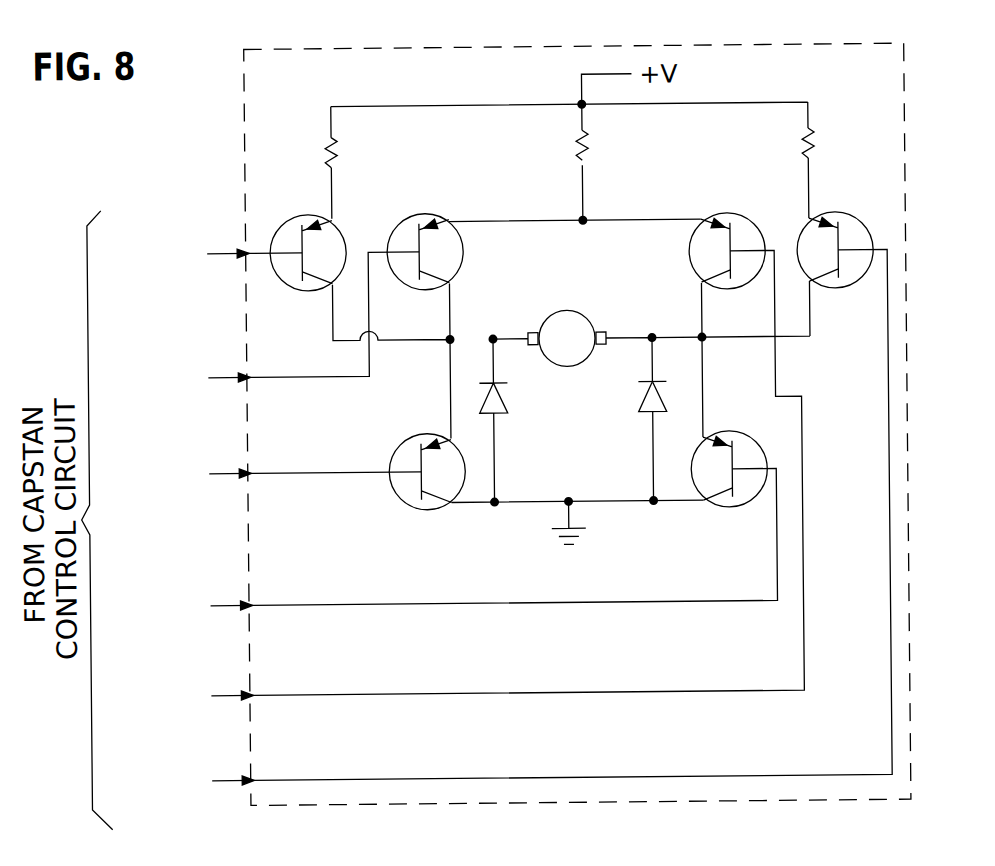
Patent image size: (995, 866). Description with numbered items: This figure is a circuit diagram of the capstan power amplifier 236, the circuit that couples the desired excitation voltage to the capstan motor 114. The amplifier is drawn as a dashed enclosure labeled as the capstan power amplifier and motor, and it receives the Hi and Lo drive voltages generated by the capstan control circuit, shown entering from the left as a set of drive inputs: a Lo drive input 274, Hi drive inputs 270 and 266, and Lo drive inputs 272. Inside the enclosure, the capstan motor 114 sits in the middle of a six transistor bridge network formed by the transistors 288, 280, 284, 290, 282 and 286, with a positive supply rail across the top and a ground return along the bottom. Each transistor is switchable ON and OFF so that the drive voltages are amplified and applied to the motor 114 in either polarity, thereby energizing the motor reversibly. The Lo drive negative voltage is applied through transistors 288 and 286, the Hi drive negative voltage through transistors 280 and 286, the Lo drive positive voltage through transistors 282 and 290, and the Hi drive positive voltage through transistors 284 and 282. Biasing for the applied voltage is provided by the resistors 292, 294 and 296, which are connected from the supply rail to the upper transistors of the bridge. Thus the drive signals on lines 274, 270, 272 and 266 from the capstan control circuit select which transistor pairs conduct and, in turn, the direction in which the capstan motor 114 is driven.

The capstan power amplifier 236 is at (246, 128).
The LO drive line 274 is at (212, 252).
The HI drive line 270 is at (220, 376).
The LO drive line 272 is at (338, 472).
The HI drive line 266 is at (392, 694).
The transistor 288 is at (333, 228).
The transistor 280 is at (463, 267).
The transistor 282 is at (421, 436).
The transistor 284 is at (713, 222).
The transistor 286 is at (726, 509).
The transistor 290 is at (845, 288).
The resistor 292 is at (337, 140).
The resistor 294 is at (580, 166).
The resistor 296 is at (806, 165).
The capstan motor 114 is at (575, 312).